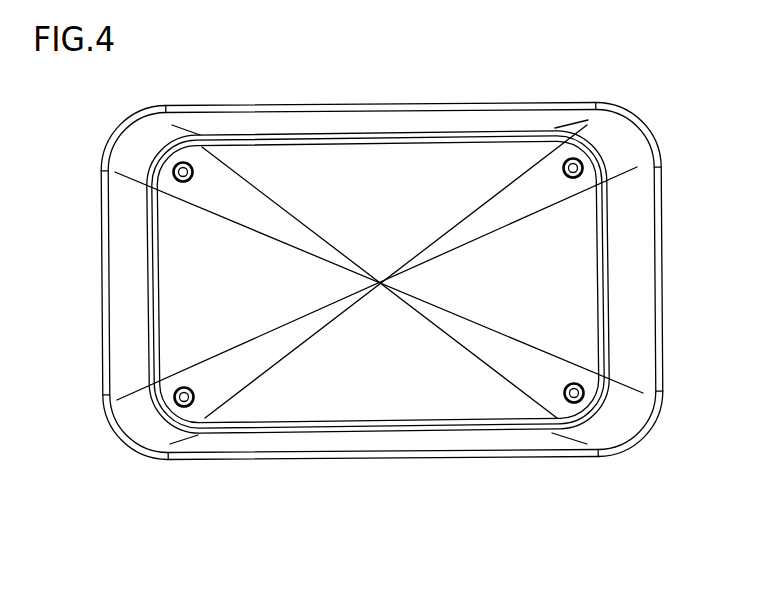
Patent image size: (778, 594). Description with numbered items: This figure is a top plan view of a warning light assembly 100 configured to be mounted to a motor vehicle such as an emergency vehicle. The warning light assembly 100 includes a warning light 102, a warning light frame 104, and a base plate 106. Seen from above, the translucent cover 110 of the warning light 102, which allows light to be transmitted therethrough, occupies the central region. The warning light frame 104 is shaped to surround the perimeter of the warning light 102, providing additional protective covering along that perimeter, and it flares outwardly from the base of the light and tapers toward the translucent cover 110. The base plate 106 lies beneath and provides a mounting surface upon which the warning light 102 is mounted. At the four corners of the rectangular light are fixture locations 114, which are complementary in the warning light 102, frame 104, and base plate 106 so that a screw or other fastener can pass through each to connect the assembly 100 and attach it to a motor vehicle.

The warning light assembly 100 is at (203, 480).
The warning light 102 is at (283, 160).
The warning light frame 104 is at (452, 120).
The base plate 106 is at (538, 102).
The translucent cover 110 is at (362, 165).
The fixture locations 114 is at (178, 168).